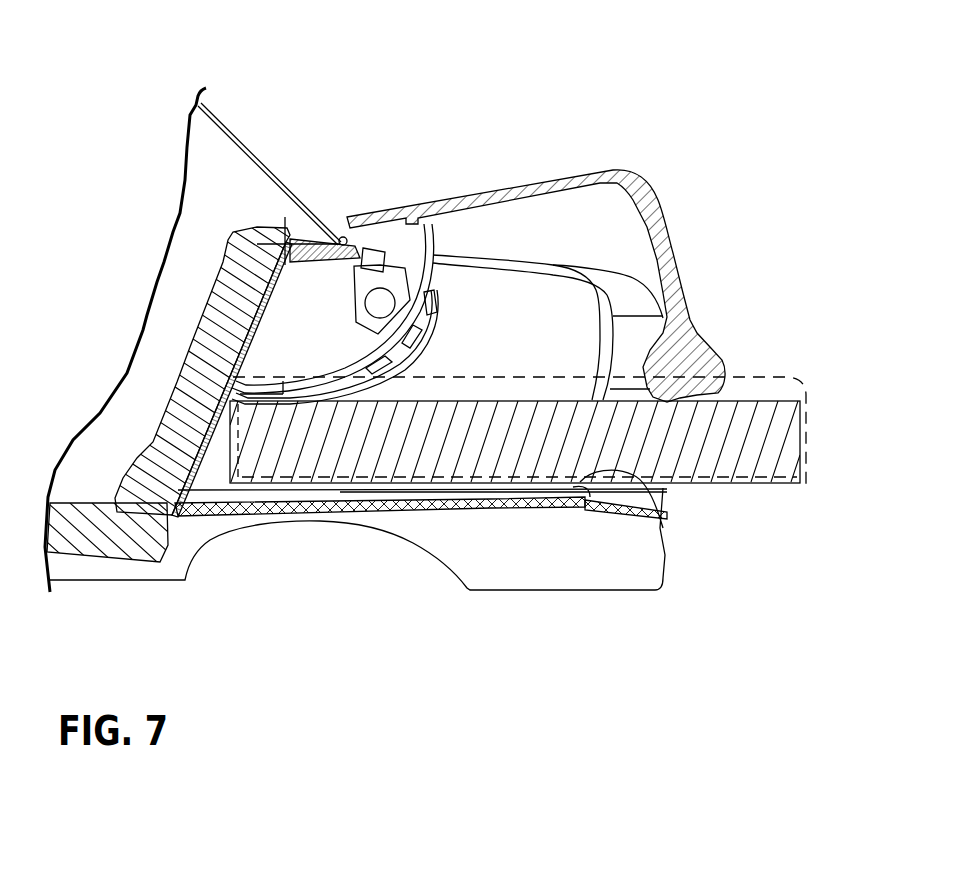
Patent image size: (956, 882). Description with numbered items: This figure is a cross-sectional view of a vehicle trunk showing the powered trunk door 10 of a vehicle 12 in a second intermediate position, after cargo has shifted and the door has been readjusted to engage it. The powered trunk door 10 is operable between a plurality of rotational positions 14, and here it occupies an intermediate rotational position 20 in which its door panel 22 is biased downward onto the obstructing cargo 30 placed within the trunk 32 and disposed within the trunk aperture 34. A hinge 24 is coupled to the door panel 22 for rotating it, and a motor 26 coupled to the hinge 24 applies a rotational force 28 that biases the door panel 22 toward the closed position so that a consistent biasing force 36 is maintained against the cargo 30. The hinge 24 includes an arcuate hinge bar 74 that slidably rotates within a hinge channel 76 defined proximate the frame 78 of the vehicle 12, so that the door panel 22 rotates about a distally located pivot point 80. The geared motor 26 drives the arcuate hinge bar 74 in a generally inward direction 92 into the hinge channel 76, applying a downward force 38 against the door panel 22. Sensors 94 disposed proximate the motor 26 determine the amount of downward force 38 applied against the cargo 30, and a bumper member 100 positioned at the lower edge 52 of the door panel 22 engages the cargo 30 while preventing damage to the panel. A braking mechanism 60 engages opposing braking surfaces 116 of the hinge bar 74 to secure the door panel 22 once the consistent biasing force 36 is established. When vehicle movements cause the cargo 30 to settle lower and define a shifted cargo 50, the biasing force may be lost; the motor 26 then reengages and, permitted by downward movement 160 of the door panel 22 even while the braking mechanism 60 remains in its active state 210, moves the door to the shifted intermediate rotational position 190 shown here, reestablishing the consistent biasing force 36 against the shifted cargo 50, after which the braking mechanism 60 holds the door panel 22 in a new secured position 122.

The powered trunk door 10 is at (515, 125).
The vehicle 12 is at (165, 105).
The plurality of rotational positions 14 is at (725, 110).
The intermediate rotational position 20 is at (722, 190).
The door panel 22 is at (622, 172).
The hinge 24 is at (360, 288).
The motor 26 is at (355, 323).
The rotational force 28 is at (352, 288).
The cargo 30 is at (813, 403).
The trunk 32 is at (218, 485).
The trunk aperture 34 is at (660, 530).
The consistent biasing force 36 is at (738, 362).
The downward force 38 is at (455, 243).
The shifted cargo 50 is at (767, 460).
The lower edge 52 is at (657, 393).
The braking mechanism 60 is at (422, 332).
The arcuate hinge bar 74 is at (424, 240).
The hinge channel 76 is at (430, 305).
The frame 78 is at (337, 516).
The pivot point 80 is at (257, 226).
The inward direction 92 is at (358, 350).
The sensors 94 is at (680, 398).
The bumper member 100 is at (673, 397).
The braking surfaces 116 is at (427, 275).
The new secured position 122 is at (426, 353).
The downward movement 160 is at (763, 352).
The shifted intermediate rotational position 190 is at (720, 252).
The active state 210 is at (320, 258).